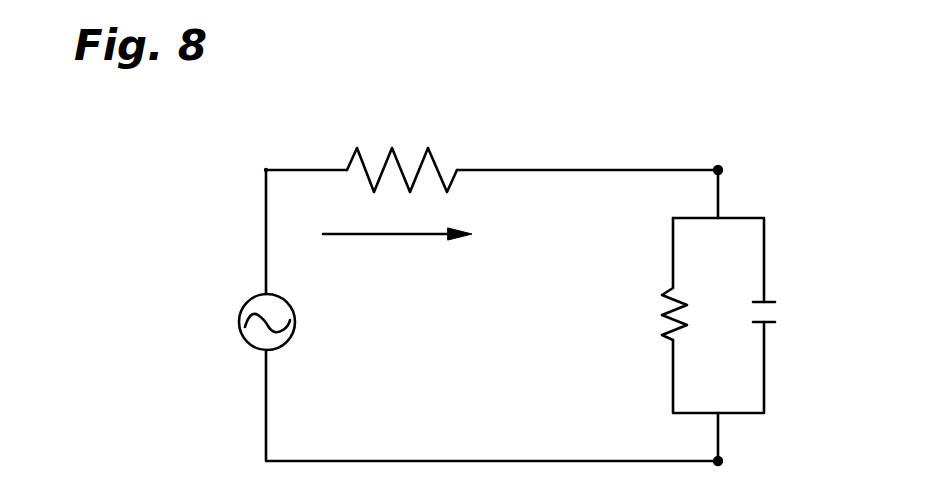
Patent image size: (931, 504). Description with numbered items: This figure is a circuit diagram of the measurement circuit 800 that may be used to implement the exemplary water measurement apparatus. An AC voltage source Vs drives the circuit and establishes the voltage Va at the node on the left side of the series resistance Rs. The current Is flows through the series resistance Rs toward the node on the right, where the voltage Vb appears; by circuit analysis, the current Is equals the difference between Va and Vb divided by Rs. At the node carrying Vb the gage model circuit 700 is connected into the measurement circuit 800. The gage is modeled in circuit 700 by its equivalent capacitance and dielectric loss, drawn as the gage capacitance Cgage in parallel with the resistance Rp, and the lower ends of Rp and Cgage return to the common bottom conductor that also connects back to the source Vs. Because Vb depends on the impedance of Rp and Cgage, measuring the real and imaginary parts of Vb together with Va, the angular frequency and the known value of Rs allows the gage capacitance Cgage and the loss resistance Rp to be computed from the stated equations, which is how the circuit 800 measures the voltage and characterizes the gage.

The circuit 800 is at (540, 120).
The circuit 700 is at (765, 216).
The series resistance Rs is at (402, 155).
The parallel resistance Rp is at (657, 279).
The gage capacitance Cgage is at (788, 314).
The voltage Va is at (263, 153).
The voltage Vb is at (716, 158).
The current Is is at (397, 251).
The AC voltage source Vs is at (267, 322).